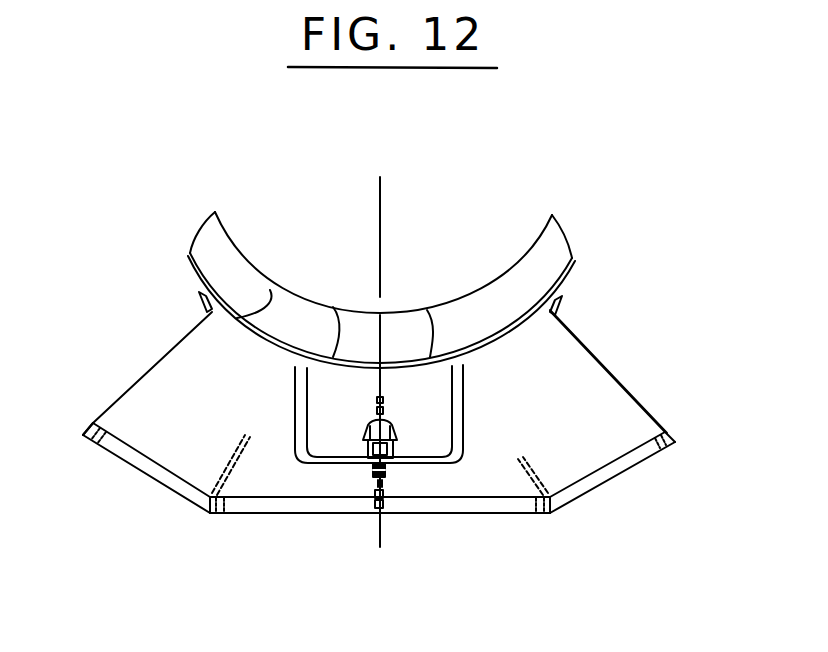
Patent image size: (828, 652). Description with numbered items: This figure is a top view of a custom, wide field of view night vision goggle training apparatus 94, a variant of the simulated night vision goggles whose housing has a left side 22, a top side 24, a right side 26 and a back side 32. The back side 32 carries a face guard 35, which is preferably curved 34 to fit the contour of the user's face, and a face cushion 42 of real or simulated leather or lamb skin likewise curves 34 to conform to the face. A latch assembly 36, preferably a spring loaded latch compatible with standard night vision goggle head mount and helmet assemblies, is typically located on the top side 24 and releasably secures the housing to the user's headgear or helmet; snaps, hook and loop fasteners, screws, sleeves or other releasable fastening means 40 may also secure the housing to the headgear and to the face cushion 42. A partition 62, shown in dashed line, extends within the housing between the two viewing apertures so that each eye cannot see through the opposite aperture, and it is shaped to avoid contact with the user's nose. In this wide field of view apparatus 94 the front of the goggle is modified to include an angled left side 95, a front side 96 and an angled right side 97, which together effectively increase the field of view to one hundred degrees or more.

The left side 22 is at (147, 374).
The top side 24 is at (167, 433).
The right side 26 is at (630, 388).
The back side 32 is at (337, 310).
The curve 34 is at (428, 312).
The face guard 35 is at (268, 287).
The latch assembly 36 is at (372, 470).
The releasable fastening means 40 is at (208, 308).
The face cushion 42 is at (223, 238).
The partition 62 is at (230, 453).
The wide field of view night vision goggle training apparatus 94 is at (628, 347).
The angled left side 95 is at (103, 447).
The front side 96 is at (273, 508).
The angled right side 97 is at (617, 472).